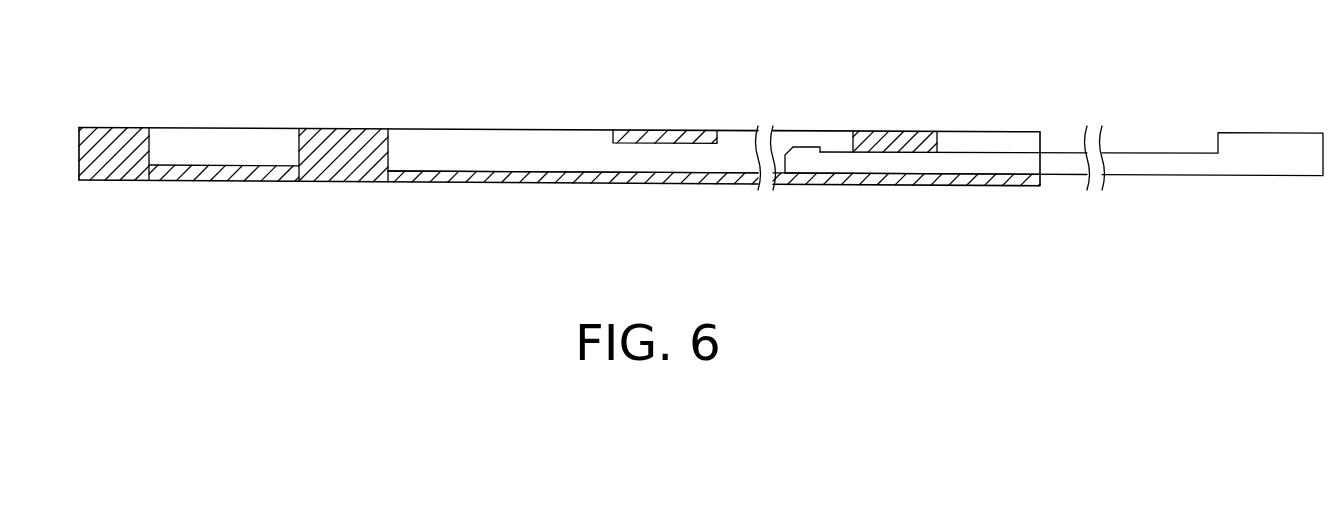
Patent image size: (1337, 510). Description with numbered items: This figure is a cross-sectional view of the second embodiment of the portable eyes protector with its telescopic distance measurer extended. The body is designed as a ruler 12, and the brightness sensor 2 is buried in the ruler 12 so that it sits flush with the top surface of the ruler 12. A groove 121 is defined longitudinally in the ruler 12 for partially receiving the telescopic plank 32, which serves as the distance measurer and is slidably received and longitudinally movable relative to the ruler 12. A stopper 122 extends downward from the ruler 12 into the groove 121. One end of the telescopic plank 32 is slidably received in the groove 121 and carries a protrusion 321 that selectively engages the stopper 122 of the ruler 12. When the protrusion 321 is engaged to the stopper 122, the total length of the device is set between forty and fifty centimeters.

The ruler 12 is at (118, 143).
The brightness sensor 2 is at (233, 137).
The groove 121 is at (430, 155).
The stopper 122 is at (897, 150).
The telescopic plank 32 is at (1046, 110).
The protrusion 321 is at (805, 150).